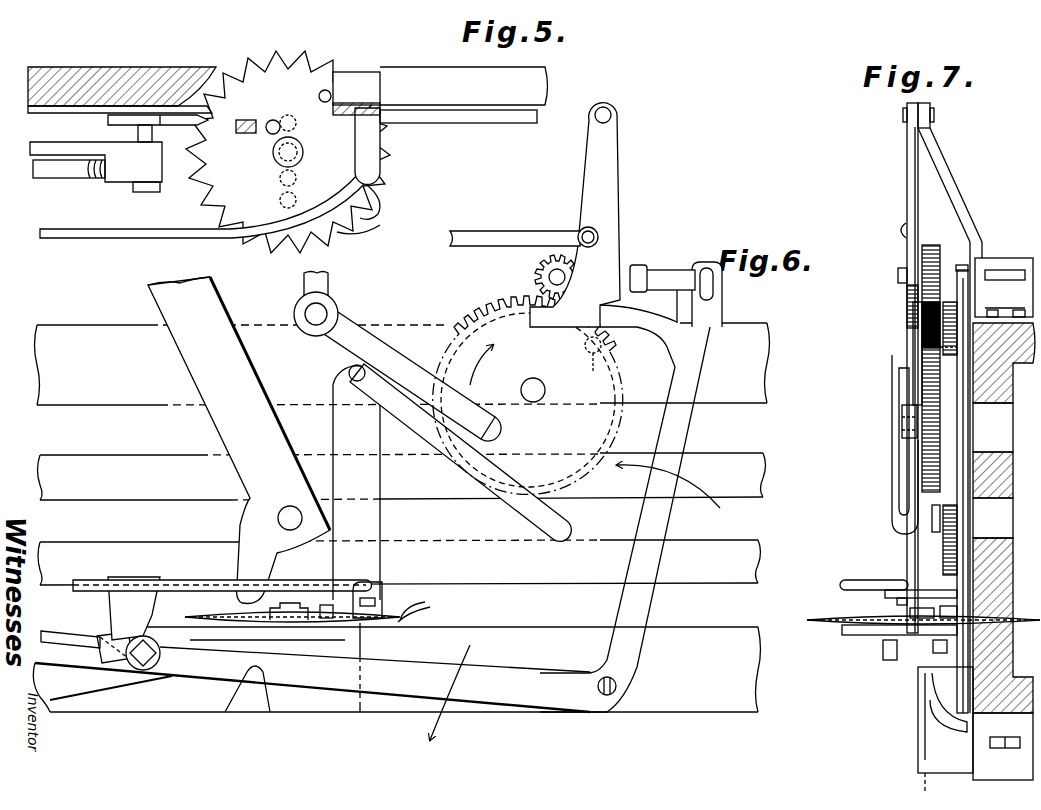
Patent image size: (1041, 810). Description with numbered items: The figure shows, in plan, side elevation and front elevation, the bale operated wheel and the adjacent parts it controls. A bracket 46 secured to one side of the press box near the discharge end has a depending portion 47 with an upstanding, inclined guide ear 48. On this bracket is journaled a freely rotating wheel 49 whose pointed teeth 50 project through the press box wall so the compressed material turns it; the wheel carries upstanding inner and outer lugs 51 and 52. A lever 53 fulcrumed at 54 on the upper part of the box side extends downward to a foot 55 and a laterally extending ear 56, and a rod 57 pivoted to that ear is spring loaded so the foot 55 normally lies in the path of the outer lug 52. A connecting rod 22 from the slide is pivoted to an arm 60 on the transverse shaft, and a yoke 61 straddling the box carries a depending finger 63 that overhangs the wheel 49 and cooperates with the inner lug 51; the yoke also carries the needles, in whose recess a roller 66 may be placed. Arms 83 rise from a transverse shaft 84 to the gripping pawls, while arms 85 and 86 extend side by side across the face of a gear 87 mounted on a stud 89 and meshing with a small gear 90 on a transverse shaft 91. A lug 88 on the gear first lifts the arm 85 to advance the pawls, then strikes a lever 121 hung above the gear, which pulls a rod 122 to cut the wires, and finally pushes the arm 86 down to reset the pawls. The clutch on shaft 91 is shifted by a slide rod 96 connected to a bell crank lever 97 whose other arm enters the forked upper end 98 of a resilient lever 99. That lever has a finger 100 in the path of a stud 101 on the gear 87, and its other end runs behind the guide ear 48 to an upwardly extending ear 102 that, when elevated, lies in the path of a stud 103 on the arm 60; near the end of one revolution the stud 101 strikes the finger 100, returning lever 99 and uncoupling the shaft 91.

In FIG. 6, the connecting rod 22 is at (57, 636).
In FIG. 6, the bracket 46 is at (352, 633).
In FIG. 7, the bracket 46 is at (862, 633).
In FIG. 6, the depending portion 47 is at (340, 700).
In FIG. 7, the depending portion 47 is at (970, 653).
In FIG. 6, the guide ear 48 is at (250, 683).
In FIG. 7, the guide ear 48 is at (933, 678).
In FIG. 5, the wheel 49 is at (230, 180).
In FIG. 6, the wheel 49 is at (205, 618).
In FIG. 7, the wheel 49 is at (840, 618).
In FIG. 5, the pointed teeth 50 is at (354, 220).
In FIG. 6, the pointed teeth 50 is at (419, 613).
In FIG. 5, the inner lug 51 is at (271, 134).
In FIG. 6, the inner lug 51 is at (276, 609).
In FIG. 5, the outer lug 52 is at (320, 93).
In FIG. 6, the outer lug 52 is at (330, 608).
In FIG. 7, the outer lug 52 is at (948, 612).
In FIG. 5, the lever 53 is at (385, 106).
In FIG. 6, the lever 53 is at (370, 489).
In FIG. 7, the lever 53 is at (968, 446).
In FIG. 6, the fulcrum 54 is at (349, 372).
In FIG. 5, the foot 55 is at (362, 82).
In FIG. 5, the ear 56 is at (370, 158).
In FIG. 6, the ear 56 is at (375, 597).
In FIG. 7, the ear 56 is at (915, 593).
In FIG. 5, the rod 57 is at (196, 234).
In FIG. 6, the rod 57 is at (213, 583).
In FIG. 7, the rod 57 is at (853, 583).
In FIG. 5, the arm 60 is at (70, 148).
In FIG. 6, the arm 60 is at (82, 678).
In FIG. 7, the arm 60 is at (925, 705).
In FIG. 6, the yoke 61 is at (200, 364).
In FIG. 6, the finger 63 is at (265, 560).
In FIG. 7, the finger 63 is at (962, 558).
In FIG. 7, the roller 66 is at (840, 620).
In FIG. 6, the arms 83 is at (328, 284).
In FIG. 6, the transverse shaft 84 is at (327, 312).
In FIG. 6, the arm 85 is at (465, 412).
In FIG. 7, the arm 85 is at (912, 395).
In FIG. 6, the arm 86 is at (528, 503).
In FIG. 7, the arm 86 is at (893, 498).
In FIG. 6, the gear 87 is at (602, 418).
In FIG. 7, the gear 87 is at (925, 440).
In FIG. 6, the lug 88 is at (462, 428).
In FIG. 7, the lug 88 is at (923, 425).
In FIG. 6, the stud 89 is at (540, 385).
In FIG. 7, the stud 89 is at (918, 390).
In FIG. 6, the small gear 90 is at (540, 268).
In FIG. 7, the small gear 90 is at (933, 257).
In FIG. 6, the transverse shaft 91 is at (548, 278).
In FIG. 7, the transverse shaft 91 is at (900, 272).
In FIG. 6, the slide rod 96 is at (642, 272).
In FIG. 6, the bell crank lever 97 is at (672, 283).
In FIG. 7, the bell crank lever 97 is at (997, 275).
In FIG. 6, the forked upper end 98 is at (716, 296).
In FIG. 7, the forked upper end 98 is at (957, 280).
In FIG. 6, the lever 99 is at (647, 573).
In FIG. 7, the lever 99 is at (925, 333).
In FIG. 6, the finger 100 is at (617, 312).
In FIG. 7, the finger 100 is at (905, 326).
In FIG. 6, the stud 101 is at (585, 361).
In FIG. 7, the stud 101 is at (943, 350).
In FIG. 5, the ear 102 is at (123, 120).
In FIG. 6, the ear 102 is at (132, 600).
In FIG. 5, the stud 103 is at (138, 133).
In FIG. 7, the stud 103 is at (935, 647).
In FIG. 6, the lever 121 is at (585, 207).
In FIG. 7, the lever 121 is at (910, 167).
In FIG. 6, the rod 122 is at (495, 227).
In FIG. 7, the rod 122 is at (899, 230).